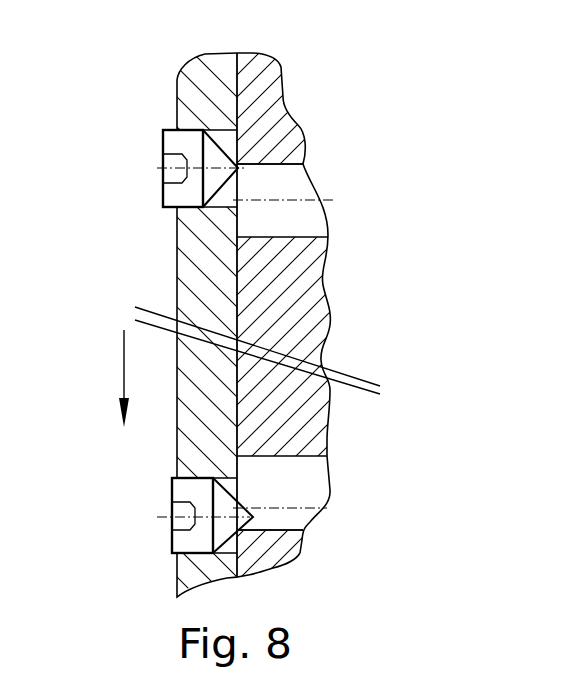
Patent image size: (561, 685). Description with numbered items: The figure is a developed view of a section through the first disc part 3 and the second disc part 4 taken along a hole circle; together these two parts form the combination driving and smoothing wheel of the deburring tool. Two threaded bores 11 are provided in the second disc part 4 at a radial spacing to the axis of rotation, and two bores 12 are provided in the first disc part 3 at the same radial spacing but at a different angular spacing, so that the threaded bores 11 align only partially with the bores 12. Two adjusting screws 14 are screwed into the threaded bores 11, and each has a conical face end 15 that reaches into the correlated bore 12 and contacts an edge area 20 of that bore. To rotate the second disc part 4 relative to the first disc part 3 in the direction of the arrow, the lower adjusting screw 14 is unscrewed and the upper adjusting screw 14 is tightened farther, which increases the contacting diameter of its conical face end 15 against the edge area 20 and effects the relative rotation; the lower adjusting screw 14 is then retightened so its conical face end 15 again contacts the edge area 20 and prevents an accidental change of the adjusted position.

The first disc part 3 is at (272, 92).
The second disc part 4 is at (210, 97).
The threaded bore 11 is at (180, 558).
The bore 12 is at (295, 220).
The adjusting screw 14 is at (185, 143).
The conical face end 15 is at (432, 495).
The edge area 20 is at (247, 533).